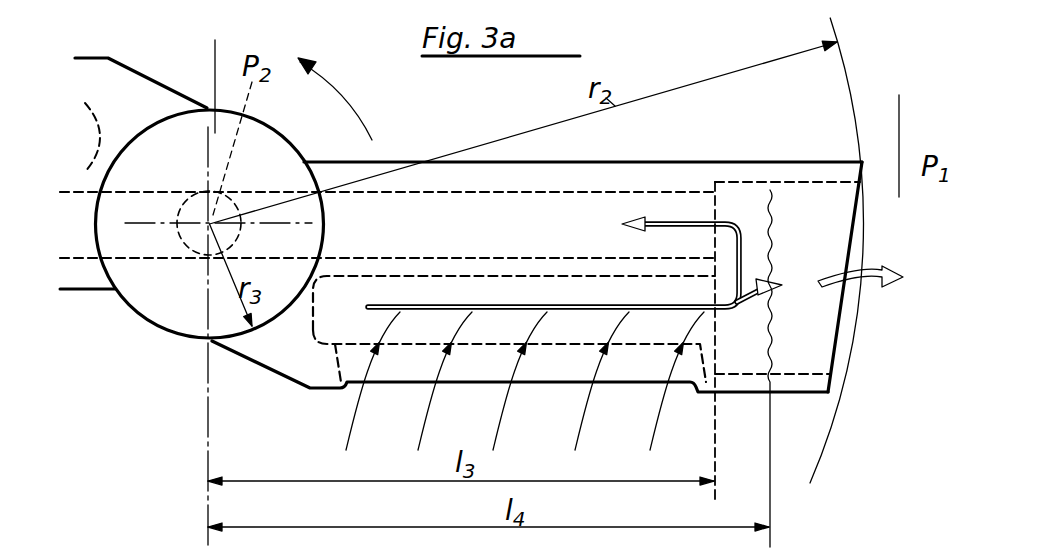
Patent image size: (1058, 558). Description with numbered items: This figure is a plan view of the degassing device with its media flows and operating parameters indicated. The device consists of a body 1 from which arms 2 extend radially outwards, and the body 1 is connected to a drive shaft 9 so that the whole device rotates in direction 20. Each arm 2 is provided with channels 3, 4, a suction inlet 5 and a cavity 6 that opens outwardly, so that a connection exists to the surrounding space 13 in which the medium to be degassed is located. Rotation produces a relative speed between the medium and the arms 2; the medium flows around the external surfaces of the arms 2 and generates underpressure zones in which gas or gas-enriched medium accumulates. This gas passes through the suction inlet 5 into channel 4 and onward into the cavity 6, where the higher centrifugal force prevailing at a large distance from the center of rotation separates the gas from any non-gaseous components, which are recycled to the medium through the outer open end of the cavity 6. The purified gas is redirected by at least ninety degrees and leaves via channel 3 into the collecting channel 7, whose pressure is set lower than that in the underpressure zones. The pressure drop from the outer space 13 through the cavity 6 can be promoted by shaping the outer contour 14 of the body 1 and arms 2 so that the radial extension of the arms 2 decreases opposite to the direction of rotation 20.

The body 1 is at (165, 295).
The arm 2 is at (90, 76).
The channel 3 is at (588, 232).
The channel 4 is at (630, 290).
The inlet 5 is at (403, 357).
The cavity 6 is at (812, 315).
The collecting channel 7 is at (195, 215).
The drive shaft 9 is at (215, 279).
The space 13 is at (908, 131).
The outer contour 14 is at (850, 248).
The direction of rotation 20 is at (347, 98).